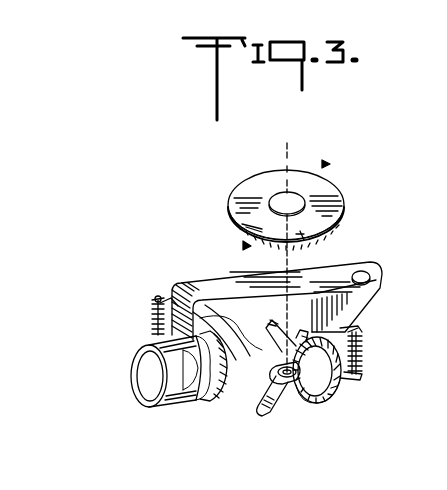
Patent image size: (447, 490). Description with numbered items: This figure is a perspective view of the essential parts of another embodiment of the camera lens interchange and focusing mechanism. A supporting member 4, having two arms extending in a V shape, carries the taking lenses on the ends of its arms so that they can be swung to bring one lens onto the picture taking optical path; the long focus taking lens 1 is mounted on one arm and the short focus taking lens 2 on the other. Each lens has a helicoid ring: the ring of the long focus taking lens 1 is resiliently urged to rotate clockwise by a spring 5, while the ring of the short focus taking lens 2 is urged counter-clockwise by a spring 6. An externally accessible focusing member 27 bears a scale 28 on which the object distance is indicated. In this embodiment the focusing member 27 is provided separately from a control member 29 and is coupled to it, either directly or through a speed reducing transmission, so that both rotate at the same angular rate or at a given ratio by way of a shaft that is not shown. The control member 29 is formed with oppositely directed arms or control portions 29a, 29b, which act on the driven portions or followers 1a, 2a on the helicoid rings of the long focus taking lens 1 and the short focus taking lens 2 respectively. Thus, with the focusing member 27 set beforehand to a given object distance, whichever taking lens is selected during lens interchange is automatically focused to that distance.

The long focus taking lens 1 is at (148, 380).
The follower 1a is at (180, 404).
The short focus taking lens 2 is at (303, 400).
The follower 2a is at (283, 357).
The supporting member 4 is at (218, 277).
The spring 5 is at (150, 322).
The spring 6 is at (362, 350).
The focusing member 27 is at (346, 207).
The scale 28 is at (356, 188).
The control member 29 is at (272, 380).
The control portion 29a is at (266, 416).
The control portion 29b is at (288, 350).